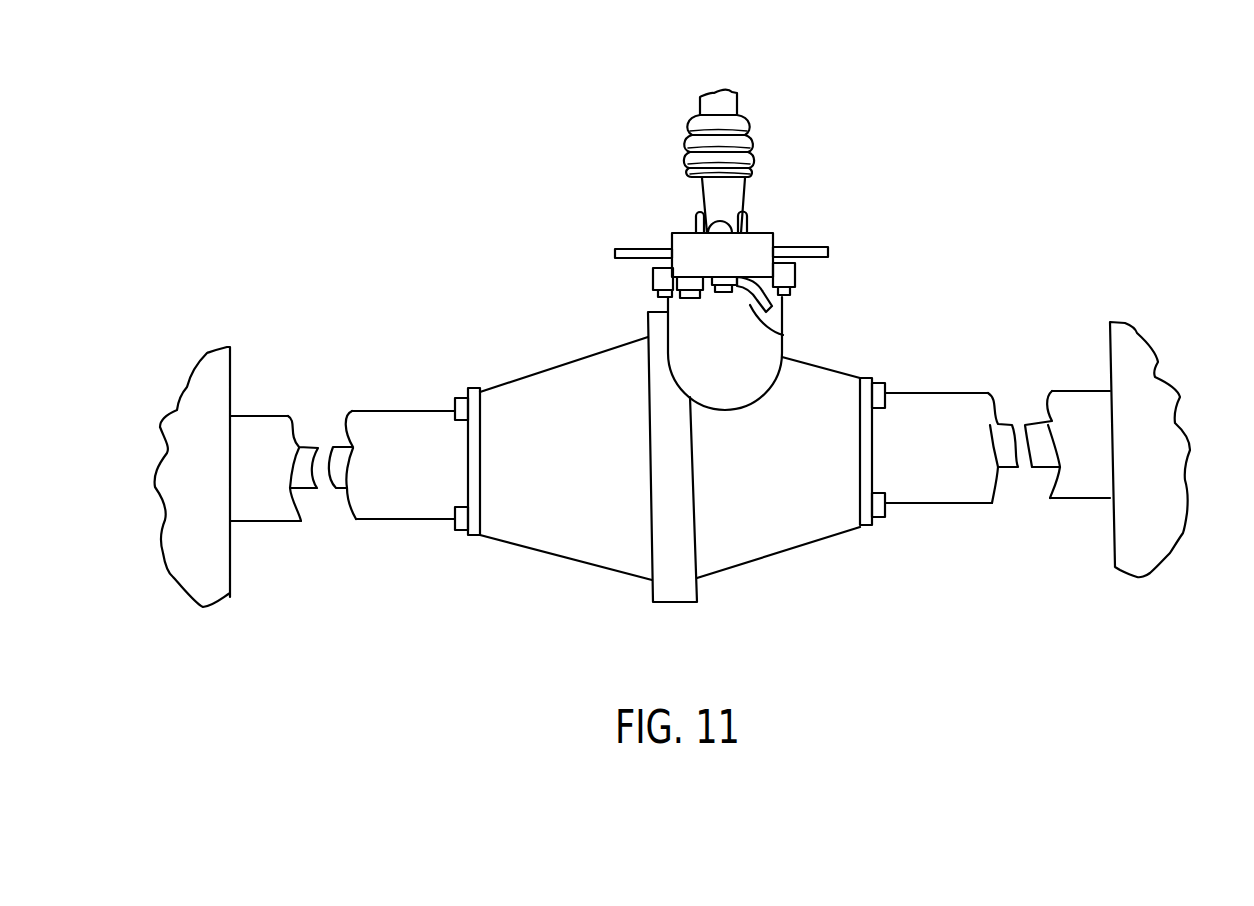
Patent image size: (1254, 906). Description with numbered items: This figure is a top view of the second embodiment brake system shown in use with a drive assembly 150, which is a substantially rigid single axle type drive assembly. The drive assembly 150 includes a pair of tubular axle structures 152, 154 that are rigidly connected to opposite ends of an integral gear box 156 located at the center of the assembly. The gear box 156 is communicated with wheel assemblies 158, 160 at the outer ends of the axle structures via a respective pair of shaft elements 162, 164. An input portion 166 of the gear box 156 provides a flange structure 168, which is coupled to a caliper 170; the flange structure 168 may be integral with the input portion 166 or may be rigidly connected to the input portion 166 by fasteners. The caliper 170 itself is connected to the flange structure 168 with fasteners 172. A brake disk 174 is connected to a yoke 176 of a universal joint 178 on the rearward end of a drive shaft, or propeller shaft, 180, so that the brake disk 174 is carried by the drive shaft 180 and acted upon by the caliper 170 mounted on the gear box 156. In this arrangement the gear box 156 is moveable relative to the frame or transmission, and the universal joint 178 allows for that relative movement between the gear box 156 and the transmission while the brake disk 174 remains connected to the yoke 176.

The drive assembly 150 is at (832, 590).
The tubular axle structure 152 is at (427, 502).
The tubular axle structure 154 is at (1075, 487).
The gear box 156 is at (683, 550).
The wheel assembly 158 is at (195, 400).
The wheel assembly 160 is at (1152, 385).
The shaft element 162 is at (337, 448).
The shaft element 164 is at (1037, 433).
The input portion 166 is at (747, 362).
The flange structure 168 is at (650, 280).
The caliper 170 is at (683, 245).
The fasteners 172 is at (783, 335).
The brake disk 174 is at (832, 248).
The yoke 176 is at (697, 215).
The universal joint 178 is at (732, 205).
The drive shaft 180 is at (728, 102).